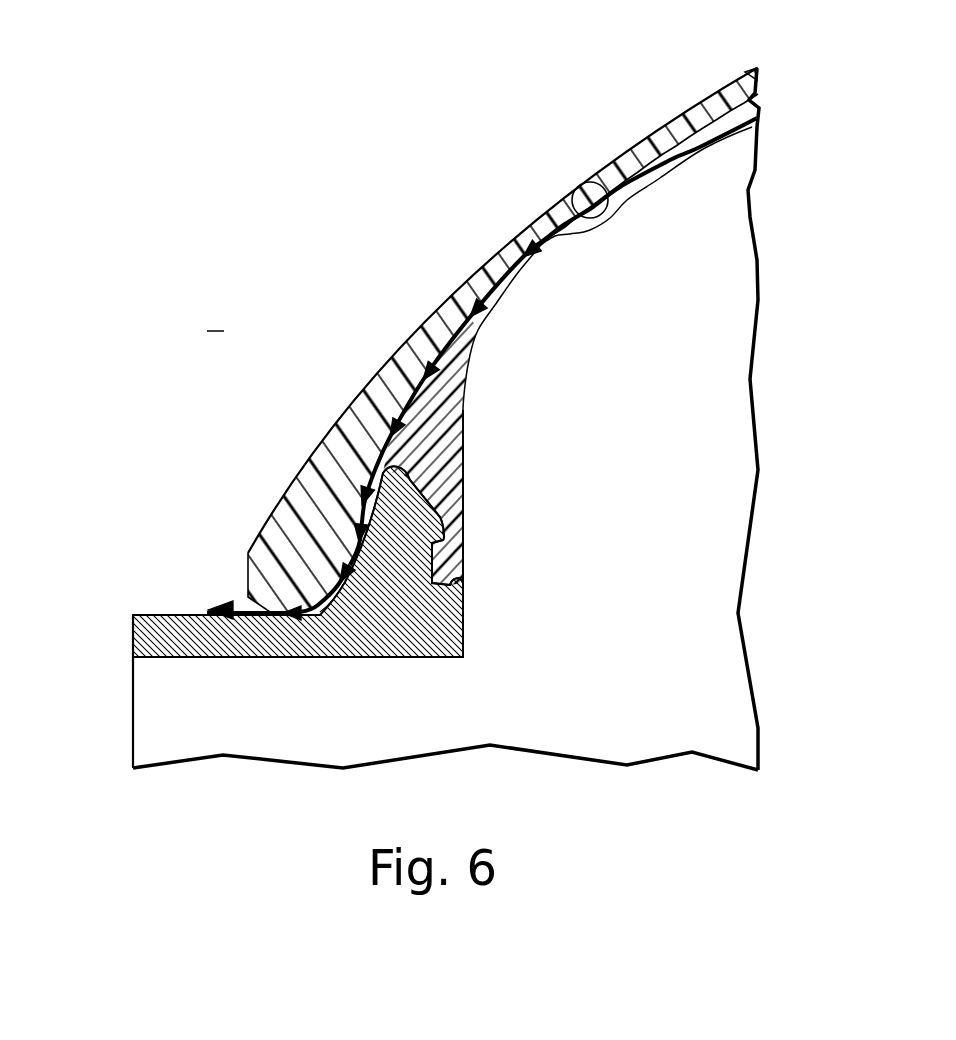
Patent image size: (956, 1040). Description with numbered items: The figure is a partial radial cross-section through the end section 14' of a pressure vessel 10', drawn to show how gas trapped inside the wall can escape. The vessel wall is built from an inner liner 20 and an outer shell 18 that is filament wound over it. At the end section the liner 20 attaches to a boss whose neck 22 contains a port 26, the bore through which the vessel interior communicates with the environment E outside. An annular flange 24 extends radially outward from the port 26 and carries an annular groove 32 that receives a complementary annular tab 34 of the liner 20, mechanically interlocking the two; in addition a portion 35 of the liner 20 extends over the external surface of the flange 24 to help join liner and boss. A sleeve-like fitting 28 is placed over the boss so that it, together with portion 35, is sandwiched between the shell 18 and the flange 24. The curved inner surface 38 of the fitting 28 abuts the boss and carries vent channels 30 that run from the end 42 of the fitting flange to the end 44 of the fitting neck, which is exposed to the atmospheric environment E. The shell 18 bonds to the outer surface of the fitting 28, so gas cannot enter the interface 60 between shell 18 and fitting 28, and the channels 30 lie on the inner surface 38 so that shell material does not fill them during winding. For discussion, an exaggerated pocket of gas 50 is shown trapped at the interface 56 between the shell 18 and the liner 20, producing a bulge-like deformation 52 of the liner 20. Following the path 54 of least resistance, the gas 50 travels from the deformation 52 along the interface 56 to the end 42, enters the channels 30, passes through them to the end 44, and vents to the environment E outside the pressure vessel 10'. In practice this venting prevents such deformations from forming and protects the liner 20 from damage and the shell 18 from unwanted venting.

The pressure vessel 10' is at (508, 400).
The end section 14' is at (503, 321).
The shell 18 is at (720, 103).
The liner 20 is at (733, 153).
The neck 22 is at (165, 622).
The annular flange 24 is at (413, 500).
The port 26 is at (160, 675).
The fitting 28 is at (370, 577).
The vent channels 30 is at (310, 616).
The annular groove 32 is at (433, 557).
The annular tab 34 is at (448, 572).
The portion of liner 35 is at (385, 470).
The inner surface 38 is at (333, 604).
The end of flange 42 is at (372, 484).
The end of neck 44 is at (248, 598).
The gas 50 is at (590, 200).
The deformation 52 is at (607, 215).
The path 54 is at (212, 600).
The interface 56 is at (535, 240).
The interface 60 is at (312, 600).
The environment E is at (215, 320).